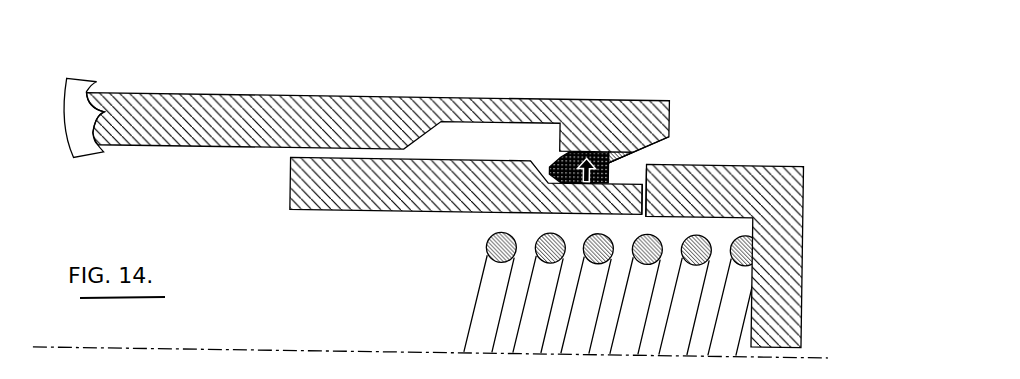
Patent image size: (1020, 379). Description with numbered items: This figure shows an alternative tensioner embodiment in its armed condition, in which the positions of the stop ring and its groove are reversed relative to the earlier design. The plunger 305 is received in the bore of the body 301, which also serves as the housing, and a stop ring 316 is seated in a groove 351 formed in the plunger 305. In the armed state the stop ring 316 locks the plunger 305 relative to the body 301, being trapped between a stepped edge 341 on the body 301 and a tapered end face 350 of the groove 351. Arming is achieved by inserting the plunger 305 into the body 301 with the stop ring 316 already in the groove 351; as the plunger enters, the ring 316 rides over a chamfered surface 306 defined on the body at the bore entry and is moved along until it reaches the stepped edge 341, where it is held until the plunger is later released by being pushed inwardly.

The body 301 is at (653, 114).
The plunger 305 is at (752, 174).
The chamfered surface 306 is at (614, 157).
The stop ring 316 is at (566, 170).
The stepped edge 341 is at (621, 162).
The tapered end face 350 is at (537, 166).
The groove 351 is at (636, 192).